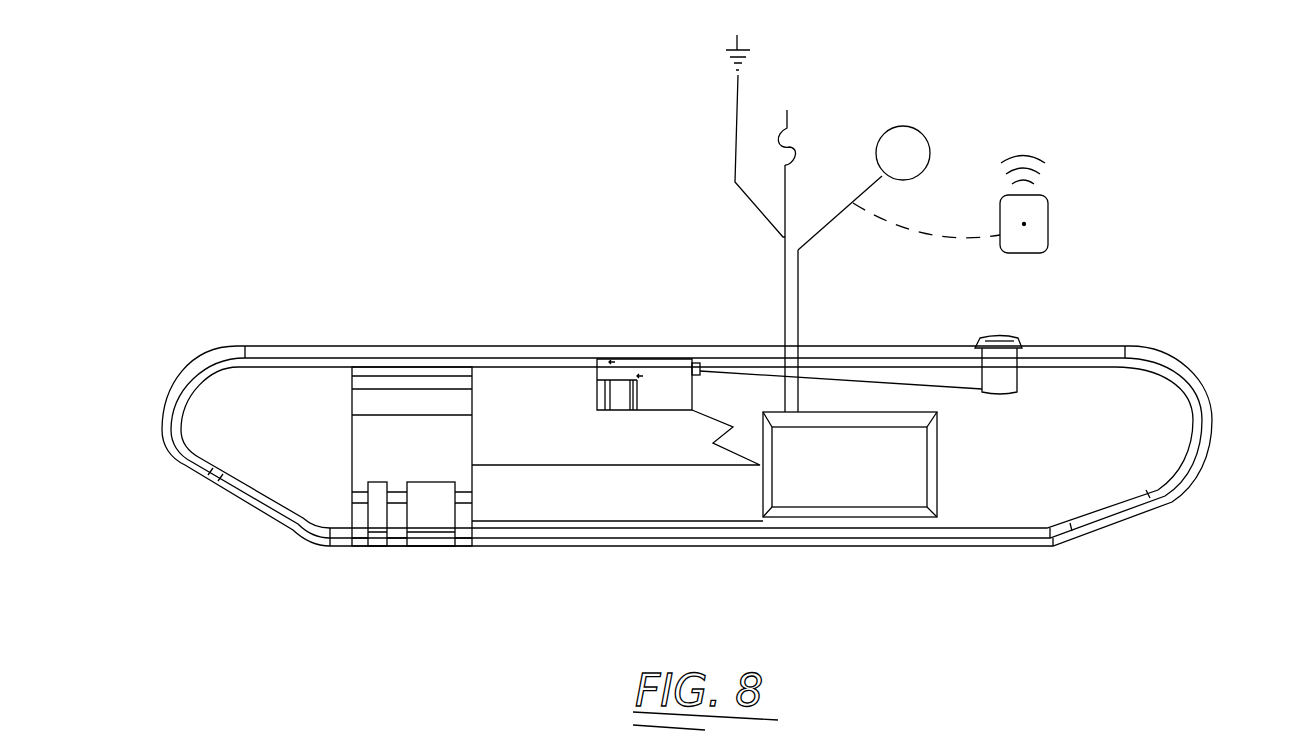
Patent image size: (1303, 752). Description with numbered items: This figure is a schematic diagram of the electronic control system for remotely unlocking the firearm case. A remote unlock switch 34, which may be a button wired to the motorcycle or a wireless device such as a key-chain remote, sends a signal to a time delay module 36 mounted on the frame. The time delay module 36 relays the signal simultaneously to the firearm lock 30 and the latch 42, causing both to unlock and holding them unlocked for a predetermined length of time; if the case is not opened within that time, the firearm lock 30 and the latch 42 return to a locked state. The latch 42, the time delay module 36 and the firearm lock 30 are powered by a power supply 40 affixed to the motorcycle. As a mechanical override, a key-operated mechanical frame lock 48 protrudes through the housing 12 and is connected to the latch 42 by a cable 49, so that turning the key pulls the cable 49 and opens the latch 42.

The housing 12 is at (795, 118).
The firearm lock 30 is at (370, 458).
The remote unlock switch 34 is at (1046, 225).
The time delay module 36 is at (923, 502).
The power supply 40 is at (781, 284).
The latch 42 is at (657, 373).
The mechanical frame lock 48 is at (1015, 337).
The cable 49 is at (963, 393).